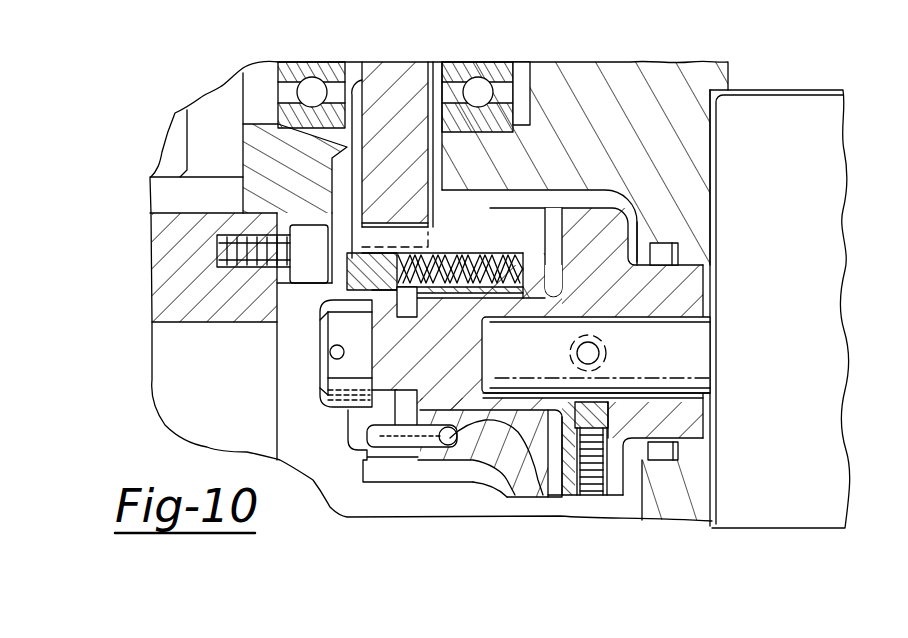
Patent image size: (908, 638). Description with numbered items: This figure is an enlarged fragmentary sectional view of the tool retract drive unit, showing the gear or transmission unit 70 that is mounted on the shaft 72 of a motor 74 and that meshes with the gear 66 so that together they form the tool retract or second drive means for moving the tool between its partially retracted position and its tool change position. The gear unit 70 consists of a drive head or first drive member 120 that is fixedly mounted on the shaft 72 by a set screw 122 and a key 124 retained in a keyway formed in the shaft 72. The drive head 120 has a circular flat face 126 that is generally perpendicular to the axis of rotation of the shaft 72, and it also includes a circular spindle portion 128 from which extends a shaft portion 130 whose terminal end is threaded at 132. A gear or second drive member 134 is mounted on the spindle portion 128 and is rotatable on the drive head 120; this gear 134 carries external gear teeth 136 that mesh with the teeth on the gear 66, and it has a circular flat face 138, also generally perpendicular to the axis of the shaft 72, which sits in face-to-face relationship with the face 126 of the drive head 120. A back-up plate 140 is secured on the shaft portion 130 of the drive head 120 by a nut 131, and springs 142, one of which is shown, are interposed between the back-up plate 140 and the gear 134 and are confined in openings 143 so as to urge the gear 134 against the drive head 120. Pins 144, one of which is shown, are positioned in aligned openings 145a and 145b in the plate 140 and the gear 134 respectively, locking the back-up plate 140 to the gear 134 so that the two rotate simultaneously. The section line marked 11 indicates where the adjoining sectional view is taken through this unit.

The gear 66 is at (398, 75).
The back-up plate 140 is at (347, 248).
The springs 142 is at (380, 289).
The gear or second drive member 134 is at (520, 262).
The circular flat face 126 is at (557, 235).
The circular flat face 138 is at (678, 248).
The circular spindle portion 128 is at (463, 372).
The drive head or first drive member 120 is at (683, 290).
The motor 74 is at (790, 353).
The shaft 72 is at (700, 371).
The openings 143 is at (517, 292).
The threaded terminal end 132 is at (320, 387).
The nut 131 is at (322, 382).
The shaft portion 130 is at (347, 408).
The external gear teeth 136 is at (473, 482).
The opening 145a is at (362, 445).
The pins 144 is at (430, 435).
The gear or transmission unit 70 is at (517, 463).
The opening 145b is at (533, 473).
The set screw 122 is at (595, 473).
The key 124 is at (608, 415).
The section line 11 is at (622, 150).